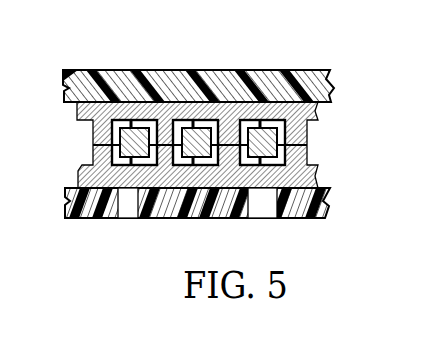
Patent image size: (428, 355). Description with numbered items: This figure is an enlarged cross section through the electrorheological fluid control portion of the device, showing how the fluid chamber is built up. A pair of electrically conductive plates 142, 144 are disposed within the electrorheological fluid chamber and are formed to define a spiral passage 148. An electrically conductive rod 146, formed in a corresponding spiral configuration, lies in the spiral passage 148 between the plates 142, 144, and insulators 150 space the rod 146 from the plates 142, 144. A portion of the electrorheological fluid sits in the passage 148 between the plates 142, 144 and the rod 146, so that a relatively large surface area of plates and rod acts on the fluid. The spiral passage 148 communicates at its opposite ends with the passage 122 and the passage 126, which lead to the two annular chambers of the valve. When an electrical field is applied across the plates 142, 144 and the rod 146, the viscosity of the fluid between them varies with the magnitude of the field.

The passage 122 is at (252, 217).
The passage 126 is at (117, 196).
The electrically conductive plate 142 is at (165, 119).
The electrically conductive plate 144 is at (183, 190).
The electrically conductive rod 146 is at (203, 137).
The spiral passage 148 is at (254, 172).
The insulator 150 is at (119, 103).